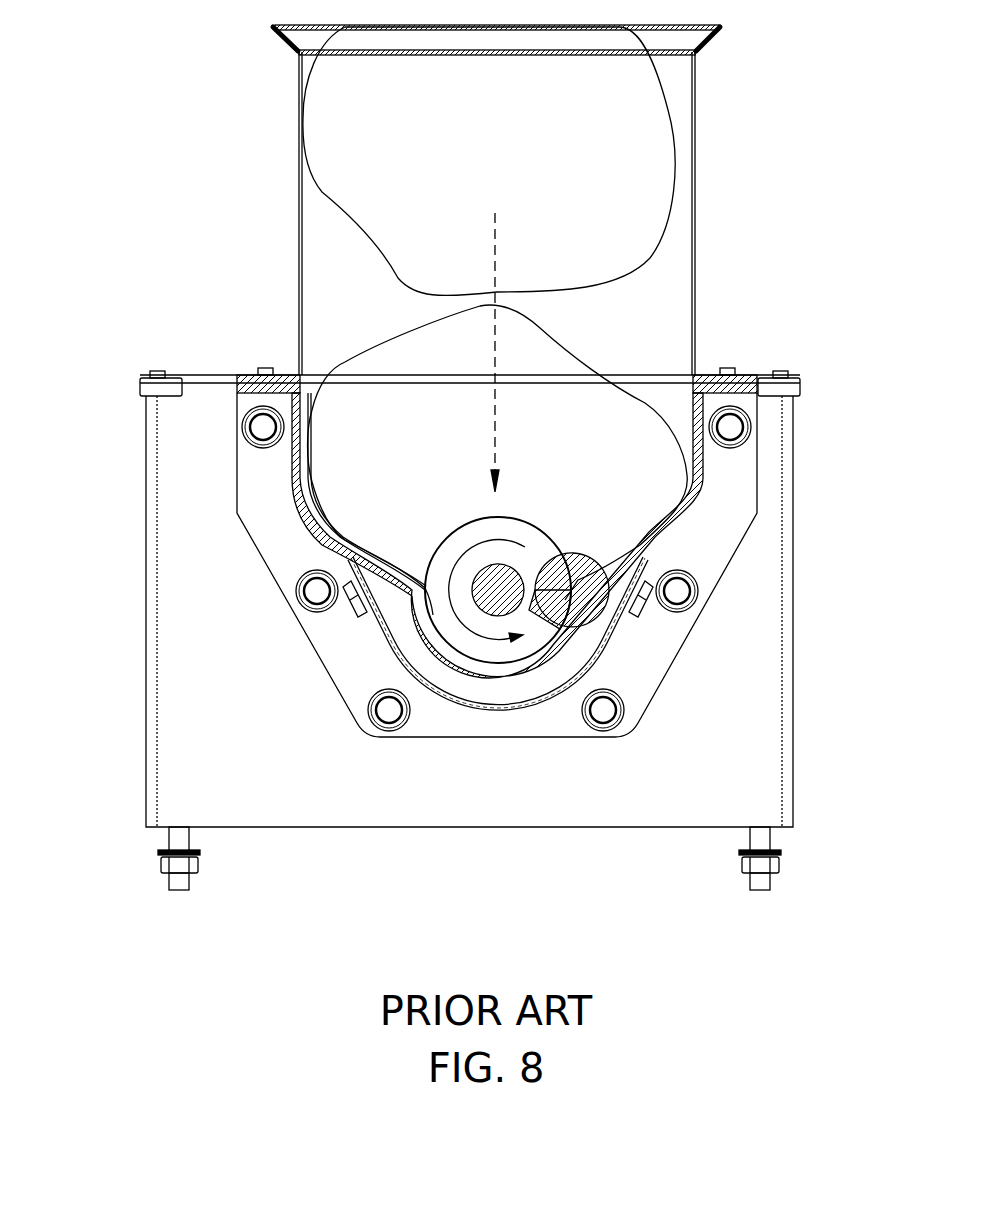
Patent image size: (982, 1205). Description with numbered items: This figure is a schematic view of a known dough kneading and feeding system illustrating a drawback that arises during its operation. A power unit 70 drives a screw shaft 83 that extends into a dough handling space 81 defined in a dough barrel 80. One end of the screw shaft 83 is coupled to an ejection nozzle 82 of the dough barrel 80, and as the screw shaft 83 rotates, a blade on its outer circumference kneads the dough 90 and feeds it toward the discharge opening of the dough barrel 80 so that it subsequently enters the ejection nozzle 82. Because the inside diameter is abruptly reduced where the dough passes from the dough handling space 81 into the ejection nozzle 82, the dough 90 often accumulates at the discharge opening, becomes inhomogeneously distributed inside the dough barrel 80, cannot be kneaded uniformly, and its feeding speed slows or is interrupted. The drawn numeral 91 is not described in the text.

The power unit 70 is at (131, 395).
The dough barrel 80 is at (420, 633).
The dough handling space 81 is at (305, 497).
The ejection nozzle 82 is at (516, 668).
The screw shaft 83 is at (535, 623).
The dough 90 is at (437, 410).
The material in hopper 91 is at (355, 116).